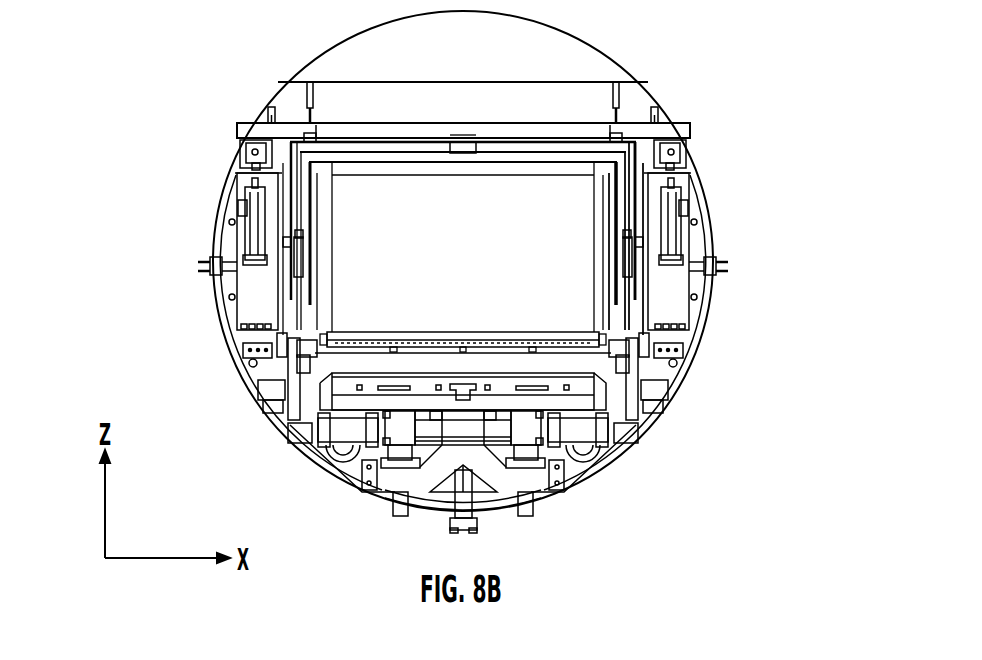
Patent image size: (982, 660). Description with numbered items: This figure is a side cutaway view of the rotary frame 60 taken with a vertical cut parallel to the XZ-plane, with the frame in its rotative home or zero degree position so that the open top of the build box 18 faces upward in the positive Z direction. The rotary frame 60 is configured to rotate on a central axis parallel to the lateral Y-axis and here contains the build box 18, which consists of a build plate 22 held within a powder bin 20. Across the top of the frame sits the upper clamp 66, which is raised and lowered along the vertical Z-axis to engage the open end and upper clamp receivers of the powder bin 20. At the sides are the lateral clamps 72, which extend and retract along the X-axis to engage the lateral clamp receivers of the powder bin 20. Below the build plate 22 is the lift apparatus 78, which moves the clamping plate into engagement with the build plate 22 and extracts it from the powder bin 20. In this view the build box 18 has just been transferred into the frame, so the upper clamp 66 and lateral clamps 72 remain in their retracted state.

The build box 18 is at (713, 257).
The powder bin 20 is at (613, 317).
The build plate 22 is at (365, 330).
The rotary frame 60 is at (703, 325).
The upper clamp 66 is at (550, 107).
The lateral clamps 72 is at (637, 252).
The lift apparatus 78 is at (497, 499).